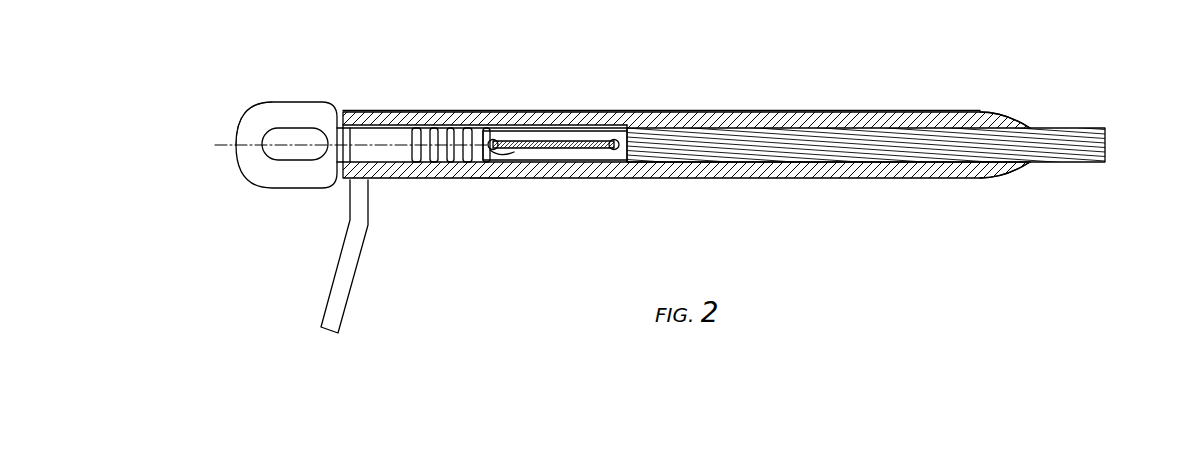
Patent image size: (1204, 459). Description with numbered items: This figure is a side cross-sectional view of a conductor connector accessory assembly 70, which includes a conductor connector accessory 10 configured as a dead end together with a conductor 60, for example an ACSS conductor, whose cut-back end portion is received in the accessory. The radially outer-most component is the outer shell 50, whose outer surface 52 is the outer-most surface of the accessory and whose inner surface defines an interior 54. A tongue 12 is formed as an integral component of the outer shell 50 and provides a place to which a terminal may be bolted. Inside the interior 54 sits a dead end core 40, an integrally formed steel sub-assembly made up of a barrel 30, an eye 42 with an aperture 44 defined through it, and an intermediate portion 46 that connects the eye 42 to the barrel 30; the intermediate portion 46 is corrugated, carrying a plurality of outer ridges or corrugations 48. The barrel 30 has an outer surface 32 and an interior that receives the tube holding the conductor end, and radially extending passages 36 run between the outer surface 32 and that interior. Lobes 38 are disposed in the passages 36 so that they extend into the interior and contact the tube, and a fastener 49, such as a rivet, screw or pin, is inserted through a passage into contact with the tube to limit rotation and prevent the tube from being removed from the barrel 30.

The conductor connector accessory 10 is at (810, 258).
The tongue 12 is at (336, 280).
The barrel 30 is at (571, 163).
The outer surface 32 is at (567, 165).
The radially extending passages 36 is at (591, 159).
The lobes 38 is at (533, 165).
The dead end core 40 is at (259, 102).
The eye 42 is at (239, 131).
The aperture 44 is at (284, 162).
The intermediate portion 46 is at (405, 130).
The corrugations 48 is at (462, 126).
The fastener 49 is at (488, 181).
The outer shell 50 is at (602, 80).
The outer surface 52 is at (553, 111).
The interior 54 is at (622, 122).
The conductor 60 is at (1080, 115).
The conductor connector accessory assembly 70 is at (1054, 226).